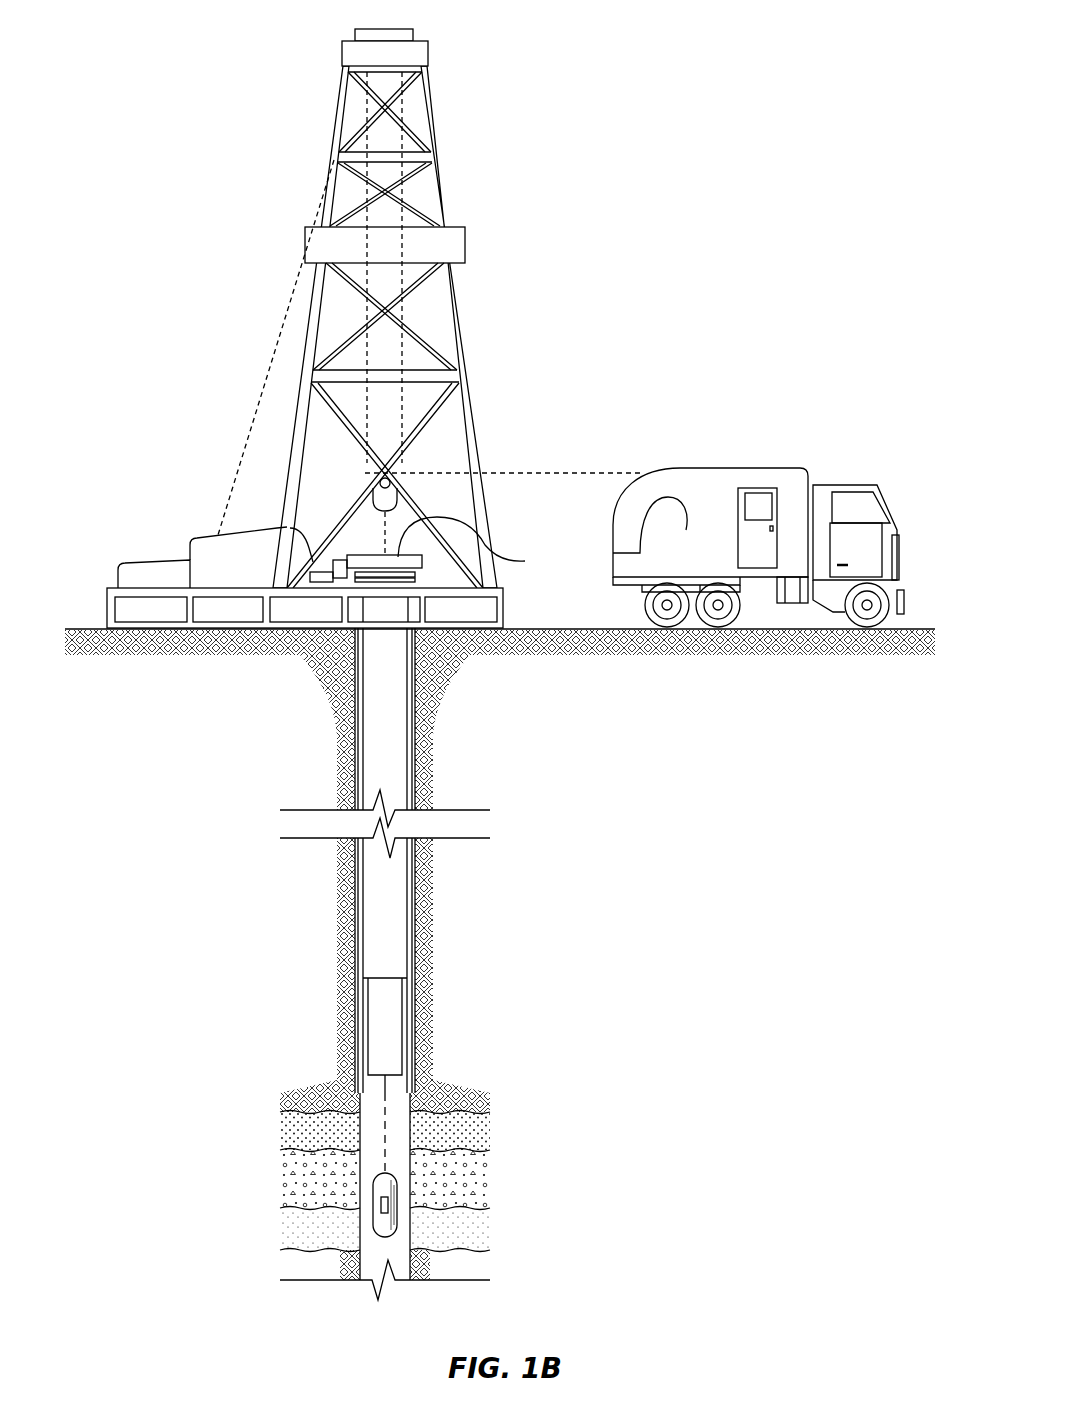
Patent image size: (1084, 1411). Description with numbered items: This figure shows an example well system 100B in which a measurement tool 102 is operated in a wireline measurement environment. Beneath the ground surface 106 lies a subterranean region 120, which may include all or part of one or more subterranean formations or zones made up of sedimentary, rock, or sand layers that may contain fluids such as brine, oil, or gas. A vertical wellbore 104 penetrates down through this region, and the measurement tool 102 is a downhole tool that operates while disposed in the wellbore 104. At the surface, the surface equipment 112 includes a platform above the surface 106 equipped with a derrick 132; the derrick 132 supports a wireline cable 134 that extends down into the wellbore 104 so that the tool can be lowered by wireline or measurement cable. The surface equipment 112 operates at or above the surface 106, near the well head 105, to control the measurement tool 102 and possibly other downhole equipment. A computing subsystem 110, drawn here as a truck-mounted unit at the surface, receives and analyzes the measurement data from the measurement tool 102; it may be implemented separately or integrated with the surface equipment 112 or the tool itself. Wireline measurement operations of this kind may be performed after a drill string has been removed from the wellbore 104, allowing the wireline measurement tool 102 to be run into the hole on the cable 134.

The well system 100B is at (265, 42).
The derrick 132 is at (440, 155).
The surface equipment 112 is at (596, 322).
The wireline cable 134 is at (377, 537).
The computing subsystem 110 is at (757, 500).
The well head 105 is at (485, 546).
The ground surface 106 is at (538, 628).
The wellbore 104 is at (355, 902).
The subterranean region 120 is at (500, 942).
The measurement tool 102 is at (373, 1222).